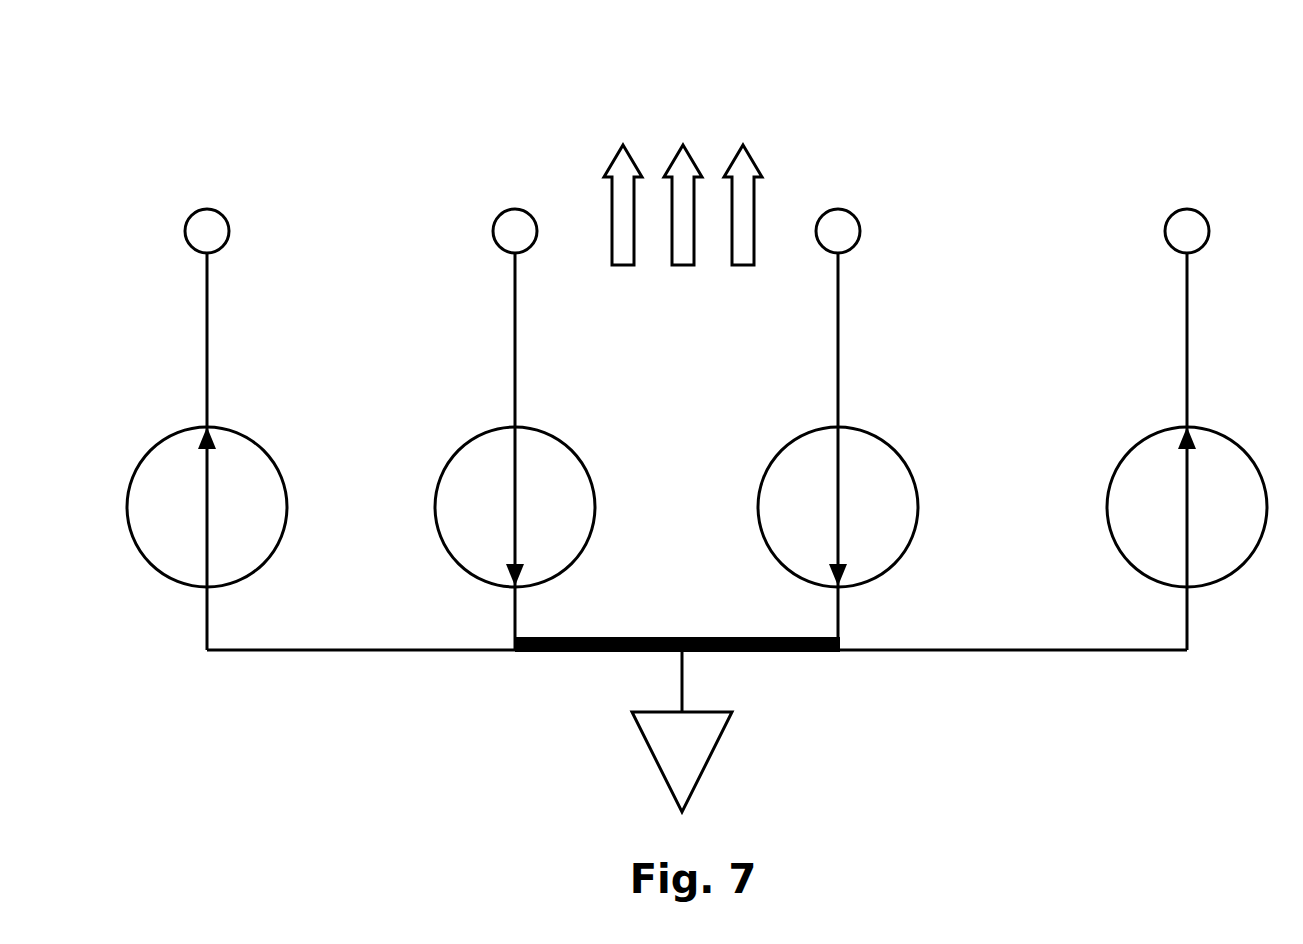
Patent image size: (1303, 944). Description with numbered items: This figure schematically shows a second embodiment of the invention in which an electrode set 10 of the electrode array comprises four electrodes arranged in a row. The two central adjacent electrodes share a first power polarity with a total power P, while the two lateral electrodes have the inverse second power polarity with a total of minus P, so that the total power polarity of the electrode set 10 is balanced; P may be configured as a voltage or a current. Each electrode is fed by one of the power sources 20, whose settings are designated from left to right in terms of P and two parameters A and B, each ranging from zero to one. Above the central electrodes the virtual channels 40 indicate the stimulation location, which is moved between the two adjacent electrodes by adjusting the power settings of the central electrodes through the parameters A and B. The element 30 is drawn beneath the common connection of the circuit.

The electrode set 10 is at (1170, 78).
The power sources 20 is at (162, 435).
The ground electrode G 30 is at (723, 748).
The virtual channels 40 is at (582, 143).